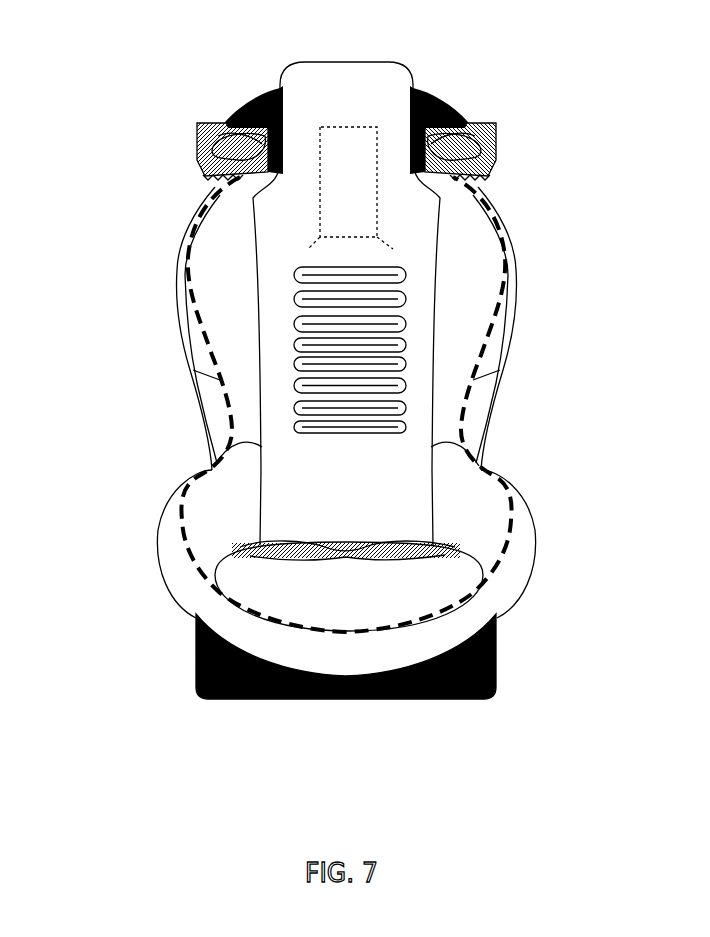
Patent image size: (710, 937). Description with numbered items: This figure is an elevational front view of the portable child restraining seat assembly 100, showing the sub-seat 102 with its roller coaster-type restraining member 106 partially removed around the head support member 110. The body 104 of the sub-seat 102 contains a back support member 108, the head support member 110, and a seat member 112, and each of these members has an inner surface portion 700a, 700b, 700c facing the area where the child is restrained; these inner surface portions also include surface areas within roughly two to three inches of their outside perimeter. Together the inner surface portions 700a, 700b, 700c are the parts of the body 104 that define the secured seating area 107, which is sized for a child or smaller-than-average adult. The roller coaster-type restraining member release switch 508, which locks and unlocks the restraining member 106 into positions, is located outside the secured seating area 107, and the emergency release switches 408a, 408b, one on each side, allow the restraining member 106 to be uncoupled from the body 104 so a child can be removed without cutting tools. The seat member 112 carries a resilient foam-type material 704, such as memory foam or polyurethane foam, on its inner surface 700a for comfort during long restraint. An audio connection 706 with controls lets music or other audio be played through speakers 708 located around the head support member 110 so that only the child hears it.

The portable child restraining seat assembly 100 is at (359, 426).
The sub-seat 102 is at (520, 603).
The body 104 is at (187, 586).
The roller coaster-type restraining member 106 is at (232, 152).
The seating area 107 is at (473, 436).
The back support member 108 is at (350, 360).
The head support member 110 is at (362, 187).
The seat member 112 is at (325, 582).
The roller coaster-type restraining member emergency release switch 408a is at (262, 90).
The roller coaster-type restraining member emergency release switch 408b is at (450, 107).
The roller coaster-type restraining member release switch 508 is at (496, 125).
The inner surface portion 700a is at (407, 603).
The inner surface portion 700b is at (377, 486).
The inner surface portion 700c is at (373, 117).
The resilient foam-type material 704 is at (260, 588).
The audio connection 706 is at (507, 633).
The speakers 708 is at (280, 215).